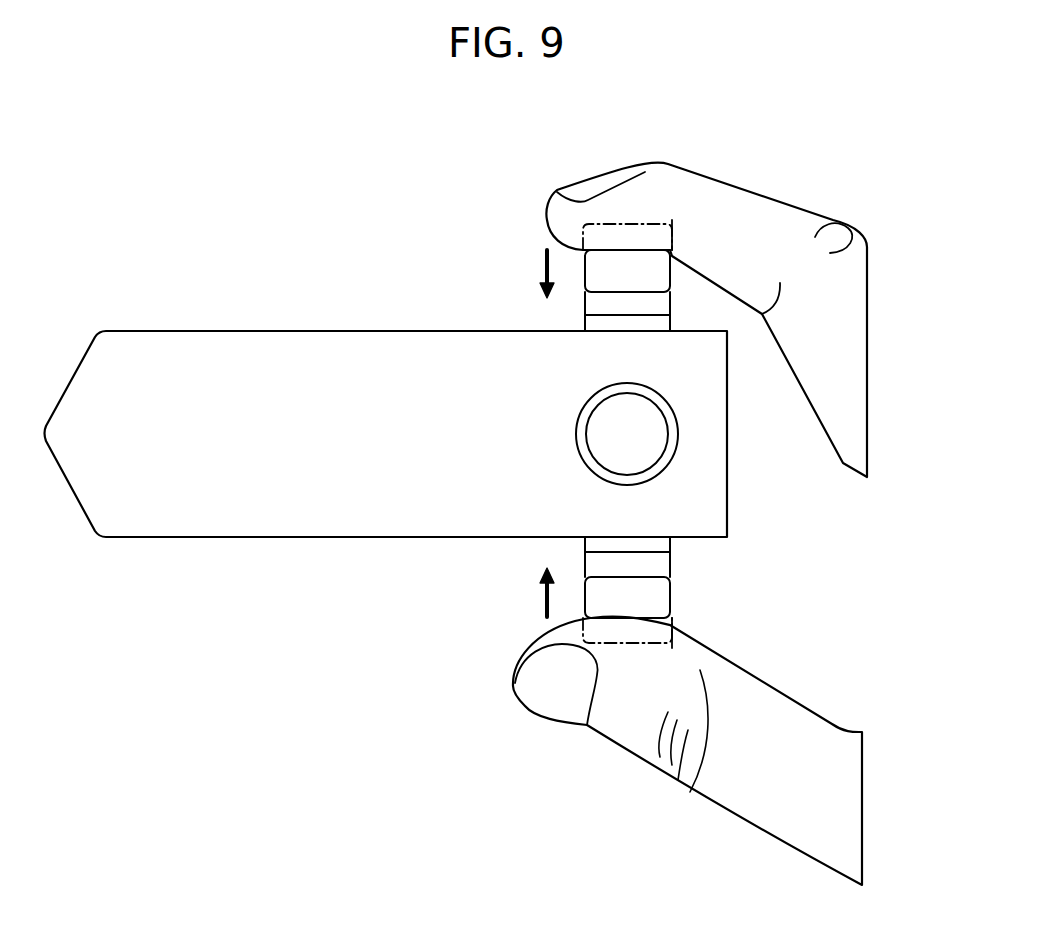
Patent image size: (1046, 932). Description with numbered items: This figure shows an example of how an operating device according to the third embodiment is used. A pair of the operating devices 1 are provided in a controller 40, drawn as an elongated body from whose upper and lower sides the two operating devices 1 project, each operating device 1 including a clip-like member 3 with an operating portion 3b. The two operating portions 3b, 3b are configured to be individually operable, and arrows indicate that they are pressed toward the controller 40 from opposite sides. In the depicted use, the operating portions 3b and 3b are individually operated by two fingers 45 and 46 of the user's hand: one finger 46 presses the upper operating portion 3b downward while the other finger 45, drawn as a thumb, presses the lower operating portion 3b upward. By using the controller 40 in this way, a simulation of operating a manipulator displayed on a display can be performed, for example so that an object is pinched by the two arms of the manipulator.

The operating device 1 is at (560, 312).
The clip 3 is at (663, 322).
The operating portion 3b is at (658, 272).
The controller 40 is at (282, 353).
The finger 45 is at (725, 800).
The finger 46 is at (778, 210).